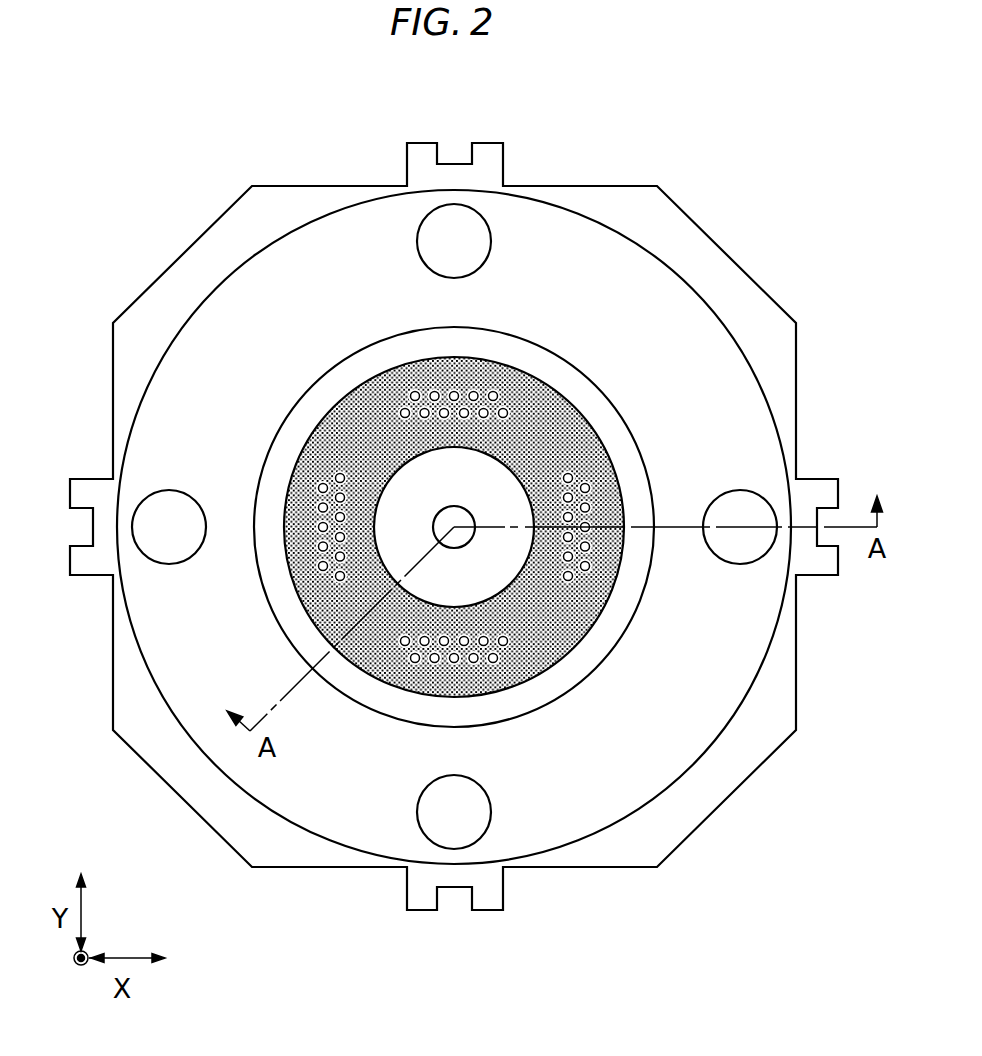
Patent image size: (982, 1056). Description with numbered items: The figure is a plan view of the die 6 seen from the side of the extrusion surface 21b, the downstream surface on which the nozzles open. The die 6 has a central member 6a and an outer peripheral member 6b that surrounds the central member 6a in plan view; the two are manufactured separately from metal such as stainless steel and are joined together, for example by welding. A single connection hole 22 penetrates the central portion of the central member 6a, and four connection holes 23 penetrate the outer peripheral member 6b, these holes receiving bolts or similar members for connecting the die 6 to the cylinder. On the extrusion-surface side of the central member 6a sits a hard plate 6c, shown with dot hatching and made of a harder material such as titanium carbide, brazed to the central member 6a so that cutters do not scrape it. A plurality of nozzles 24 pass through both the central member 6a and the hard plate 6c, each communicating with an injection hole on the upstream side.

The die 6 is at (768, 150).
The extrusion surface 21b is at (487, 505).
The central member 6a is at (605, 389).
The outer peripheral member 6b is at (697, 310).
The hard plate 6c is at (362, 405).
The connection hole 22 is at (453, 517).
The connection holes 23 is at (433, 245).
The nozzles 24 is at (434, 396).